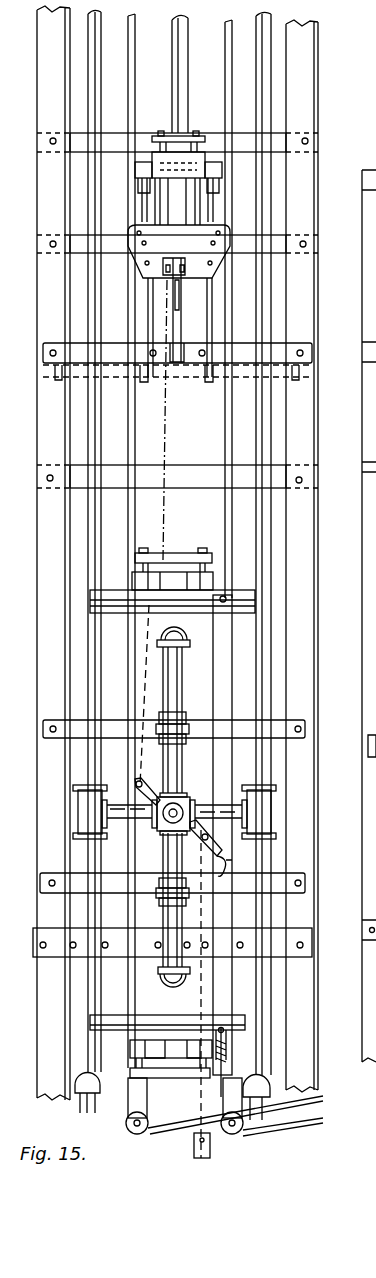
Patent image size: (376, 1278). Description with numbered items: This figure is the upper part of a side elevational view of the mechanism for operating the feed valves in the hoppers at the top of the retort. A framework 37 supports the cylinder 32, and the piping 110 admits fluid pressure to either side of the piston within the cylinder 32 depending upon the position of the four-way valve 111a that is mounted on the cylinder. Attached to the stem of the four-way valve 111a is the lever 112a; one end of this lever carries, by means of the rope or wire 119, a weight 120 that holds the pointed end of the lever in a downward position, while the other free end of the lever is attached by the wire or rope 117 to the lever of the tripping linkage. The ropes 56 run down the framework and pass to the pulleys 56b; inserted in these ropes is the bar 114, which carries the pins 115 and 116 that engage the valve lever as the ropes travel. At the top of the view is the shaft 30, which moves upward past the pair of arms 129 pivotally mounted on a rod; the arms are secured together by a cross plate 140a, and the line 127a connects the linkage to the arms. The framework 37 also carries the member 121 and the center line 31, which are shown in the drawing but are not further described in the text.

The shaft 30 is at (192, 38).
The ropes 56 is at (130, 85).
The bracket 121 is at (213, 203).
The arms 129 is at (145, 210).
The plate 140a is at (179, 251).
The rod 127a is at (176, 310).
The framework 37 is at (365, 412).
The center shaft 31 is at (177, 420).
The wire or rope 117 is at (154, 536).
The piping 110 is at (77, 574).
The bar 114 is at (225, 655).
The cylinder 32 is at (181, 807).
The four-way valve 111a is at (176, 800).
The pin 115 is at (372, 805).
The lever 112a is at (220, 845).
The pin 116 is at (222, 868).
The rope or wire 119 is at (196, 1013).
The pulleys 56b is at (224, 1120).
The weight 120 is at (221, 1149).